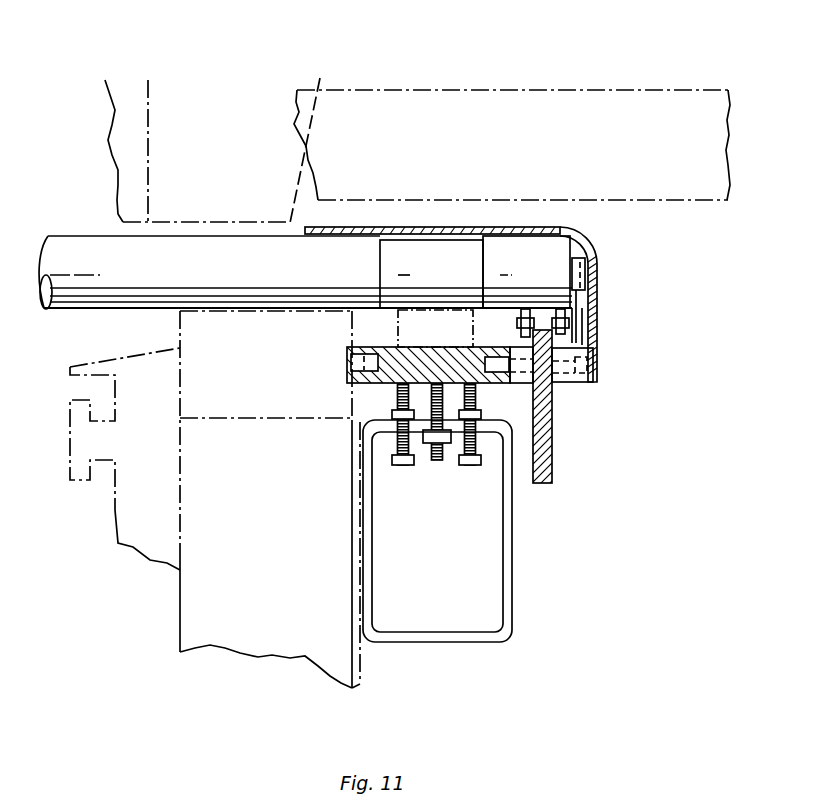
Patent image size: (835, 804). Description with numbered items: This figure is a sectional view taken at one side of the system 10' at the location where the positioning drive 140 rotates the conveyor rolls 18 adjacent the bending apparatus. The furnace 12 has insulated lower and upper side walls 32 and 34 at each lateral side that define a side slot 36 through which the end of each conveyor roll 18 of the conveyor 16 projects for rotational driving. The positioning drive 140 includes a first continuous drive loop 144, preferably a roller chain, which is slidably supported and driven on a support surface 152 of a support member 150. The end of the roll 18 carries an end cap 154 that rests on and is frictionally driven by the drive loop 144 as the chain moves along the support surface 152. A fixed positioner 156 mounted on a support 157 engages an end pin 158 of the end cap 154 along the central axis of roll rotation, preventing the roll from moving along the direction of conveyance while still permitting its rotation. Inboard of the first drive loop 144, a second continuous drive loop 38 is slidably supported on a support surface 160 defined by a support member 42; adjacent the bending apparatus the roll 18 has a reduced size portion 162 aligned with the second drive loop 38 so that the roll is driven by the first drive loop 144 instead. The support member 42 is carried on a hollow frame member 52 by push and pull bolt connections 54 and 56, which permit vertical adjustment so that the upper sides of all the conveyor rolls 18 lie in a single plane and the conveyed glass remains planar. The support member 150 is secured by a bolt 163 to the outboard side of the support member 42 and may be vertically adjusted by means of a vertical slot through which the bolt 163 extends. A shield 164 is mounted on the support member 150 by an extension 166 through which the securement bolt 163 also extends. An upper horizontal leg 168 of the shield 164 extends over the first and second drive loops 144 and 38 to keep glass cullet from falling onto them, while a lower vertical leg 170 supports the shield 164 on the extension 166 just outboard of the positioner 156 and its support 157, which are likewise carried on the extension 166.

The modified awning assembly 10' is at (512, 103).
The furnace 12 is at (378, 692).
The conveyor 16 is at (90, 190).
The conveyor rolls 18 is at (72, 236).
The lower side wall 32 is at (148, 90).
The upper side wall 34 is at (187, 611).
The side slots 36 is at (208, 226).
The second continuous drive loop 38 is at (398, 325).
The support member 42 is at (365, 378).
The hollow frame member 52 is at (512, 628).
The push bolt connections 54 is at (404, 466).
The pull bolt connections 56 is at (438, 462).
The positioning drive 140 is at (546, 504).
The first continuous drive loop 144 is at (582, 314).
The support member 150 is at (551, 440).
The support surface 152 is at (518, 322).
The end cap 154 is at (518, 237).
The fixed positioner 156 is at (594, 256).
The support 157 is at (567, 316).
The end pin 158 is at (580, 258).
The support surface 160 is at (358, 356).
The reduced size portion 162 is at (405, 243).
The securement bolt 163 is at (583, 376).
The shield 164 is at (573, 258).
The extension 166 is at (570, 348).
The upper horizontal leg 168 is at (467, 230).
The lower vertical leg 170 is at (591, 292).